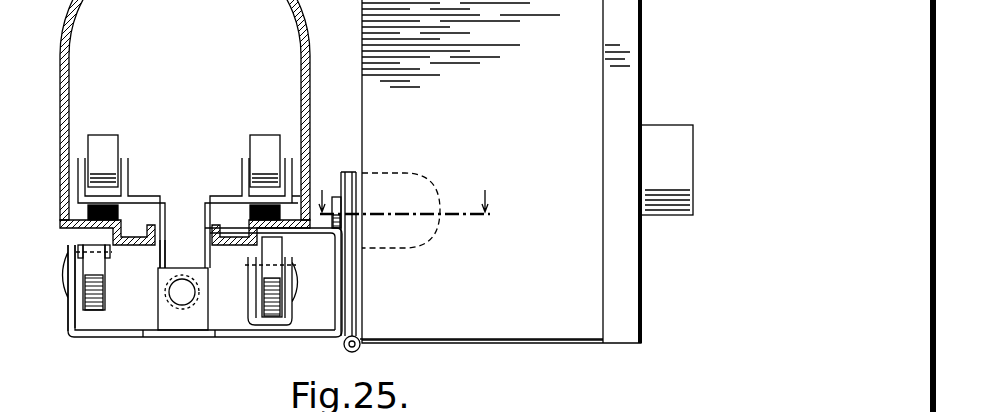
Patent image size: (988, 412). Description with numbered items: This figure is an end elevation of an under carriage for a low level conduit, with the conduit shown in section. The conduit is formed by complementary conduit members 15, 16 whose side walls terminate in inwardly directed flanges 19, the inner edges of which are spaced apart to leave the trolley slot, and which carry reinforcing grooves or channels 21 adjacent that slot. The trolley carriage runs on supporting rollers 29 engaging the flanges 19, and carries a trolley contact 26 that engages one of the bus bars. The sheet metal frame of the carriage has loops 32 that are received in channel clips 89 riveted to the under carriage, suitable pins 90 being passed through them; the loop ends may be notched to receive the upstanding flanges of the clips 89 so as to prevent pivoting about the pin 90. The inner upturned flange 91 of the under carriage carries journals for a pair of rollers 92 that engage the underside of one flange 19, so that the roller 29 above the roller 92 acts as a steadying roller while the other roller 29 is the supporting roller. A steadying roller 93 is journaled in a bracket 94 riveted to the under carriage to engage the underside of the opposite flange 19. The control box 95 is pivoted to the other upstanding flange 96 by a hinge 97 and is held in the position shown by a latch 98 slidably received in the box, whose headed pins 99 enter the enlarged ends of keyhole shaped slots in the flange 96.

The conduit member 15 is at (78, 20).
The conduit member 16 is at (288, 15).
The inwardly directed flange 19 is at (80, 225).
The supporting roller 29 is at (104, 150).
The reinforcing channel 21 is at (131, 238).
The loop 32 is at (162, 246).
The pin 90 is at (180, 308).
The channel clip 89 is at (198, 316).
The upstanding flange 96 is at (342, 296).
The inner upturned flange 91 is at (72, 298).
The roller 92 is at (91, 308).
The bracket 94 is at (252, 307).
The steadying roller 93 is at (271, 243).
The latch 98 is at (348, 170).
The headed pin 99 is at (336, 200).
The hinge 97 is at (361, 345).
The trolley contact 26 is at (401, 210).
The control box 95 is at (577, 297).